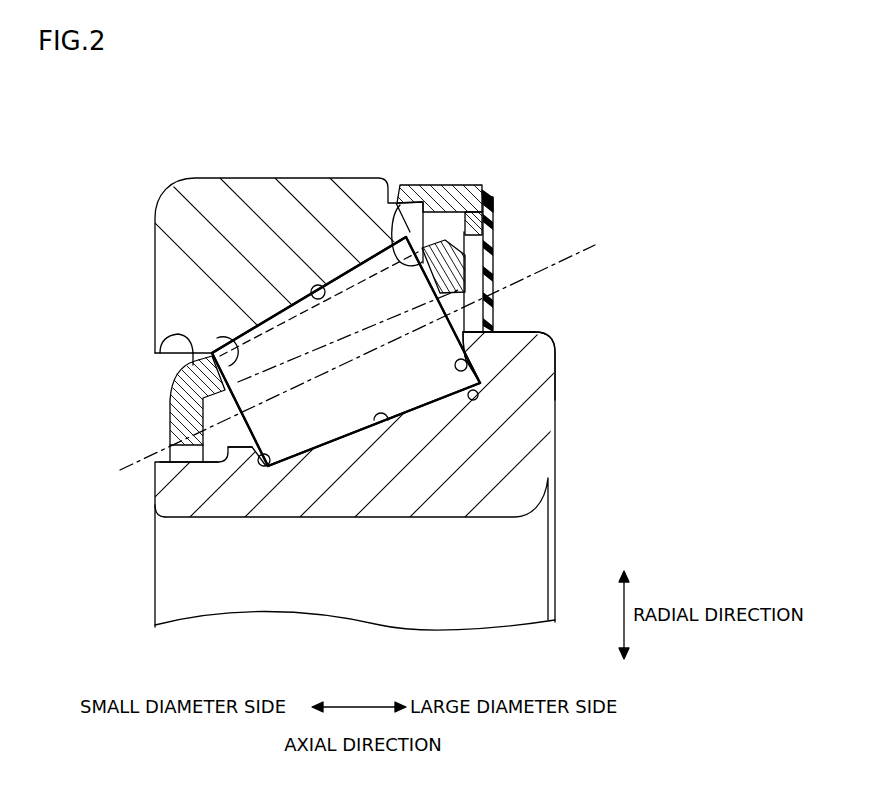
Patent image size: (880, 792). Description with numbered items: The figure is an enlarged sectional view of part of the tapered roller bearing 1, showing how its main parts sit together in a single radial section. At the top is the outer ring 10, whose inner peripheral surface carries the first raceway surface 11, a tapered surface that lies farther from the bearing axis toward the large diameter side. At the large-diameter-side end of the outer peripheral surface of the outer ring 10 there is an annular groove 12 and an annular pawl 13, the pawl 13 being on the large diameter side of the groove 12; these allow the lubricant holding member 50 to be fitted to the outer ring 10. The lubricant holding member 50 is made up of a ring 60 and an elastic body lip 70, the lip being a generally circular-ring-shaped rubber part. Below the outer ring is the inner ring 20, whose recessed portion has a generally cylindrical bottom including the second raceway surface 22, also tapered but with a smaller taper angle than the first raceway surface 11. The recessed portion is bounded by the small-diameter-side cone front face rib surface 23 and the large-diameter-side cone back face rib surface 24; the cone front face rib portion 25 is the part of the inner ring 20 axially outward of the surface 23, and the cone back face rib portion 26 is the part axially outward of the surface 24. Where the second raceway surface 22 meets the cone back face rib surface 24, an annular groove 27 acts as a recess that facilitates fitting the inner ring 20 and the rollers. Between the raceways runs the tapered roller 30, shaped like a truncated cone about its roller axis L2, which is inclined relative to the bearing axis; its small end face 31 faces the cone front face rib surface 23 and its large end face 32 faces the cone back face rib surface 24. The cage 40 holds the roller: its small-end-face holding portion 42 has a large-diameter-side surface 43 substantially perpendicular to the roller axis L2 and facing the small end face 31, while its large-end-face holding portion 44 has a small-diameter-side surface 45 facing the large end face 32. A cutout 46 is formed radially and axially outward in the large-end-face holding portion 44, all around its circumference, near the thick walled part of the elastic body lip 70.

The tapered roller bearing 1 is at (605, 132).
The outer ring 10 is at (200, 190).
The first raceway surface 11 is at (322, 280).
The annular groove 12 is at (394, 235).
The annular pawl 13 is at (423, 240).
The inner ring 20 is at (562, 413).
The second raceway surface 22 is at (383, 420).
The cone front face rib surface 23 is at (226, 463).
The cone back face rib surface 24 is at (464, 358).
The cone front face rib portion 25 is at (200, 461).
The cone back face rib portion 26 is at (511, 345).
The annular groove 27 is at (478, 395).
The tapered roller 30 is at (353, 333).
The small end face 31 is at (195, 383).
The large end face 32 is at (470, 290).
The cage 40 is at (292, 352).
The small-end-face holding portion 42 is at (175, 425).
The large-diameter-side surface 43 is at (230, 340).
The large-end-face holding portion 44 is at (492, 262).
The small-diameter-side surface 45 is at (405, 200).
The cutout 46 is at (488, 208).
The lubricant holding member 50 is at (458, 216).
The ring 60 is at (452, 195).
The elastic body lip 70 is at (484, 228).
The roller axis L2 is at (595, 247).